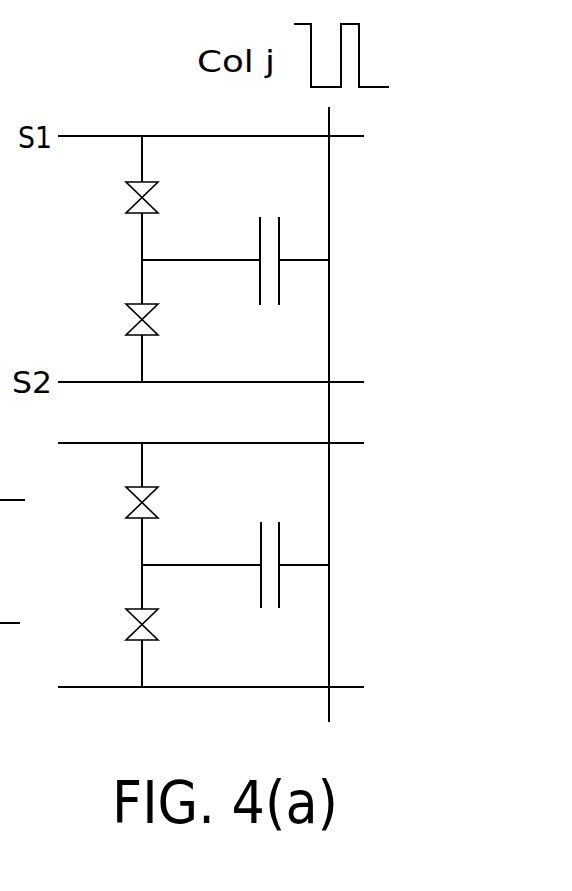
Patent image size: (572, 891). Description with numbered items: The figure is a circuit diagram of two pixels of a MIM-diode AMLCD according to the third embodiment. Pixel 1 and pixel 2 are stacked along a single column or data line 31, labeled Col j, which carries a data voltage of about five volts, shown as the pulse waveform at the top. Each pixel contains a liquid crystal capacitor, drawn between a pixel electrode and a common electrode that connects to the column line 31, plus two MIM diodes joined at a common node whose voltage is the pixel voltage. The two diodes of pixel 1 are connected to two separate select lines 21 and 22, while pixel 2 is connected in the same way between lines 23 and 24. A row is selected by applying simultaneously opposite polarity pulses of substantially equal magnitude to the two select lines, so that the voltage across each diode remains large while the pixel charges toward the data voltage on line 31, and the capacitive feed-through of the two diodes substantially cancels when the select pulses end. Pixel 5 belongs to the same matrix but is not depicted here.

The pixel 1 is at (256, 172).
The pixel 2 is at (244, 472).
The pixel 5 is at (370, 59).
The select line 21 is at (72, 136).
The select line 22 is at (341, 382).
The third select line 23 is at (343, 443).
The fourth select line 24 is at (340, 687).
The column or data line 31 is at (329, 125).